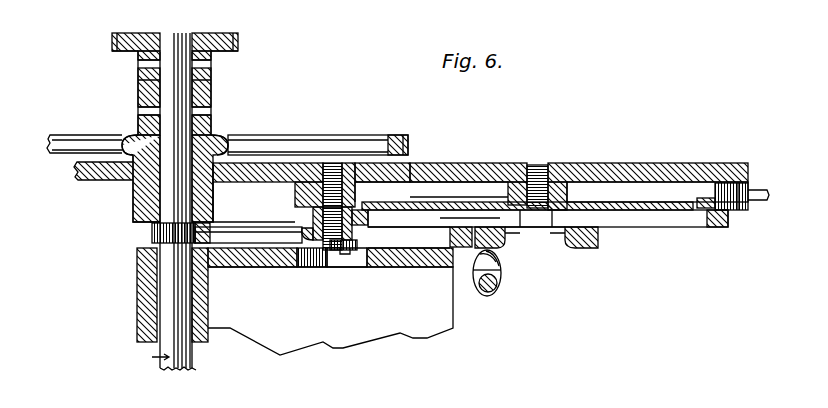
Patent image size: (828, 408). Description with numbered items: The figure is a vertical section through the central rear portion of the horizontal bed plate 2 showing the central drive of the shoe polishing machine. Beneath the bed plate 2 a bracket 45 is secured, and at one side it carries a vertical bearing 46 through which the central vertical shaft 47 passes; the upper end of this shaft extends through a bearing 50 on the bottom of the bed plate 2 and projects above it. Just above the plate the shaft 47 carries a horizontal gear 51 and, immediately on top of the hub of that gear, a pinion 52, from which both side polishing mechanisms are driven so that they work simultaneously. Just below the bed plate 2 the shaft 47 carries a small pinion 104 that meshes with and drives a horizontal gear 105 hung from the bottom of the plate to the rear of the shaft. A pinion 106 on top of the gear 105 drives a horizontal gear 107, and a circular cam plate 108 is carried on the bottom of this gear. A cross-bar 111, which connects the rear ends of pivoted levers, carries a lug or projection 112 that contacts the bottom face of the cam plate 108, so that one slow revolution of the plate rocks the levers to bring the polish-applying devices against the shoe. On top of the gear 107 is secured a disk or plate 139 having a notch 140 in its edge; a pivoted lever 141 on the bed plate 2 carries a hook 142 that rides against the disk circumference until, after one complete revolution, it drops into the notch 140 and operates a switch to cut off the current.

The bed plate 2 is at (645, 166).
The bracket 45 is at (330, 301).
The vertical bearing 46 is at (138, 292).
The vertical shaft 47 is at (192, 366).
The bearing 50 is at (133, 205).
The horizontal gear 51 is at (285, 143).
The pinion 52 is at (240, 42).
The small pinion 104 is at (152, 235).
The horizontal gear 105 is at (229, 232).
The pinion 106 is at (313, 213).
The horizontal gear 107 is at (690, 220).
The circular cam plate 108 is at (590, 248).
The cross-bar 111 is at (493, 292).
The lug or projection 112 is at (500, 266).
The disk or plate 139 is at (657, 193).
The notch 140 is at (700, 198).
The pivoted lever 141 is at (740, 206).
The hook 142 is at (720, 196).